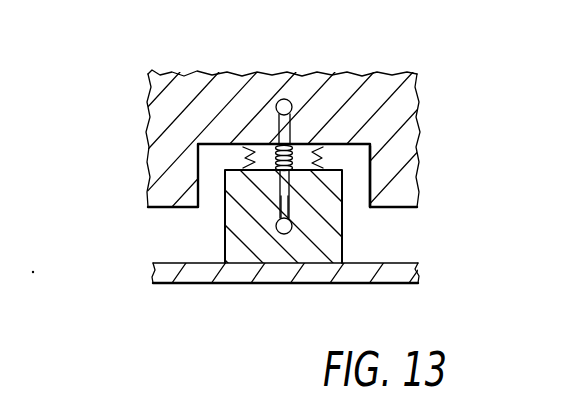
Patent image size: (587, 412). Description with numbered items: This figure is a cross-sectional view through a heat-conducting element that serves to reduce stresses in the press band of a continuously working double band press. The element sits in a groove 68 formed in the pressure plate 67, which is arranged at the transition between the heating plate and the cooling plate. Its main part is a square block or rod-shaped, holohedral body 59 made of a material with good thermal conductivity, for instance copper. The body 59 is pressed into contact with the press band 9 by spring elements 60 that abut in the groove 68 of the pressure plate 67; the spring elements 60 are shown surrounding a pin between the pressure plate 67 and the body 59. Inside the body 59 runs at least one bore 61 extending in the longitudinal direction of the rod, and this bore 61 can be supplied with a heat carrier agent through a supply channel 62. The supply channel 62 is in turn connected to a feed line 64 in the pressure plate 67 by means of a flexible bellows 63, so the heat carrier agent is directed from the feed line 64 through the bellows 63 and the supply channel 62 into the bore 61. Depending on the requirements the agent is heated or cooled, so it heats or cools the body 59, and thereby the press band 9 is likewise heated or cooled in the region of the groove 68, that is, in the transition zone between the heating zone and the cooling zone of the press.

The press band 9 is at (392, 273).
The body 59 is at (316, 230).
The spring elements 60 is at (324, 153).
The bore 61 is at (288, 236).
The supply channel 62 is at (276, 200).
The flexible bellows 63 is at (267, 146).
The feed line 64 is at (268, 112).
The pressure plate 67 is at (377, 93).
The groove 68 is at (353, 183).